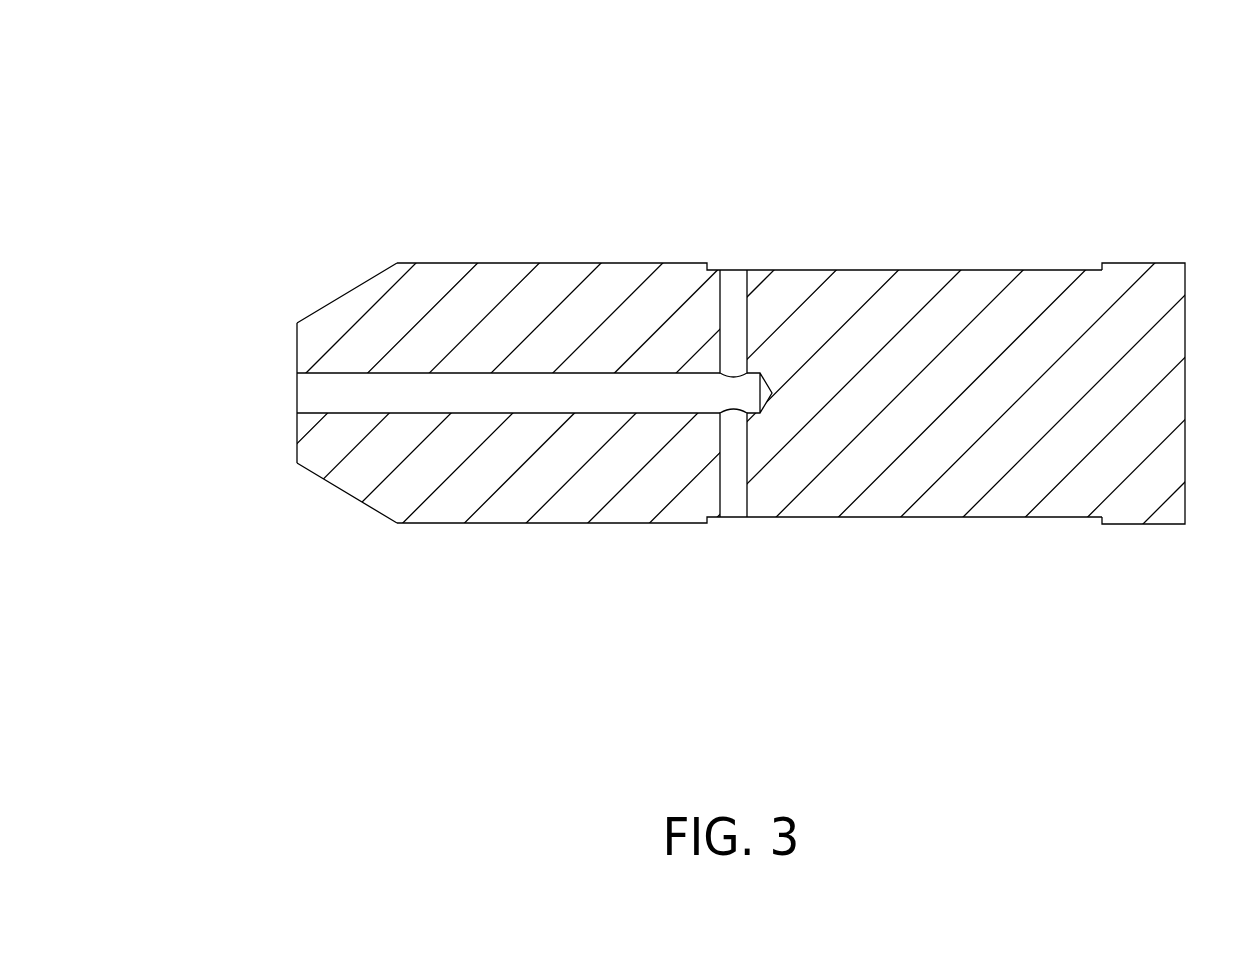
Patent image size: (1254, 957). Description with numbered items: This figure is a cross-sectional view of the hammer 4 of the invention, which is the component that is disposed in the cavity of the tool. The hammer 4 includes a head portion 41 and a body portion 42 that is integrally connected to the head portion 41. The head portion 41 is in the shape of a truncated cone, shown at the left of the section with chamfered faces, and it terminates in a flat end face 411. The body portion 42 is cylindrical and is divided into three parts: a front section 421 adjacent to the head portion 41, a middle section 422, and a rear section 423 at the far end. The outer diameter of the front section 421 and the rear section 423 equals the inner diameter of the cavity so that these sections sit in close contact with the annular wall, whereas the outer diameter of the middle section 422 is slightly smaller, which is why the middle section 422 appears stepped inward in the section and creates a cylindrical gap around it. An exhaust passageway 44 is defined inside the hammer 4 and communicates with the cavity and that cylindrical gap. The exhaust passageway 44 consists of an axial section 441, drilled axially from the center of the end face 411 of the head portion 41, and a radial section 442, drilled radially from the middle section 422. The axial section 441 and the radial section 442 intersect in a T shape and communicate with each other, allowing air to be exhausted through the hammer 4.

The hammer 4 is at (450, 232).
The head portion 41 is at (352, 308).
The end face 411 is at (296, 358).
The body portion 42 is at (557, 112).
The front section 421 is at (558, 263).
The middle section 422 is at (923, 269).
The rear section 423 is at (1132, 263).
The exhaust passageway 44 is at (748, 644).
The axial section 441 is at (542, 403).
The radial section 442 is at (733, 507).